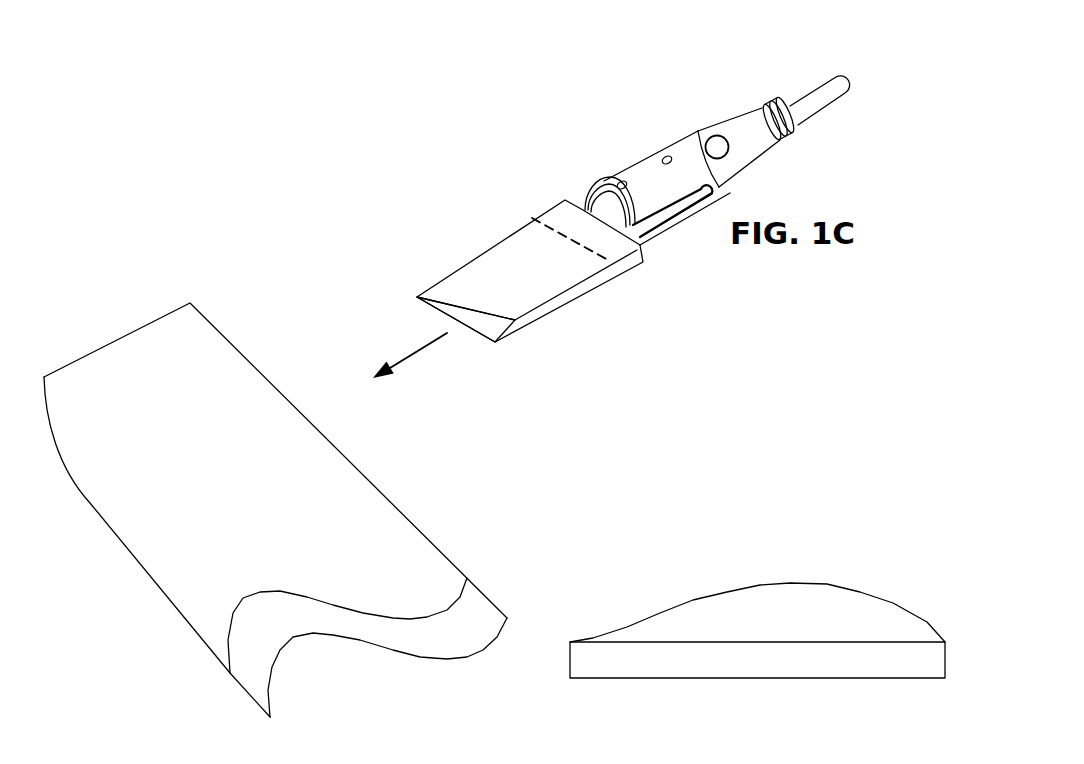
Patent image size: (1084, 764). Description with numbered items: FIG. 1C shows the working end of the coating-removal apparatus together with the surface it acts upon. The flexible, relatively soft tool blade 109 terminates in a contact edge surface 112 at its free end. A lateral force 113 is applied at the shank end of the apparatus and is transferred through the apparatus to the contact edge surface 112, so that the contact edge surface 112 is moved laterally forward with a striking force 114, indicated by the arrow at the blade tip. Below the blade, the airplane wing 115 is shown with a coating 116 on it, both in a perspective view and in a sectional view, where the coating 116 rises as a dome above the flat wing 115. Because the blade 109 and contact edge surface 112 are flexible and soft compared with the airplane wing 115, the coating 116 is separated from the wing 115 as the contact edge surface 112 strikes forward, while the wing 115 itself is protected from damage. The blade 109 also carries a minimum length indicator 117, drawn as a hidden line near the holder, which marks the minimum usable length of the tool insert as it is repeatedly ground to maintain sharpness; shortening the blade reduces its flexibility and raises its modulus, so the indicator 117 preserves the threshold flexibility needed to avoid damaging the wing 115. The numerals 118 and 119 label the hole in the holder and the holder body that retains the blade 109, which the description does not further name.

The blade 109 is at (504, 228).
The contact edge surface 112 is at (434, 281).
The lateral force 113 is at (866, 71).
The striking force 114 is at (388, 370).
The airplane wing 115 is at (494, 510).
The coating 116 is at (572, 612).
The minimum length indicator 117 is at (608, 260).
The hole 118 is at (714, 136).
The ferrule 119 is at (582, 207).